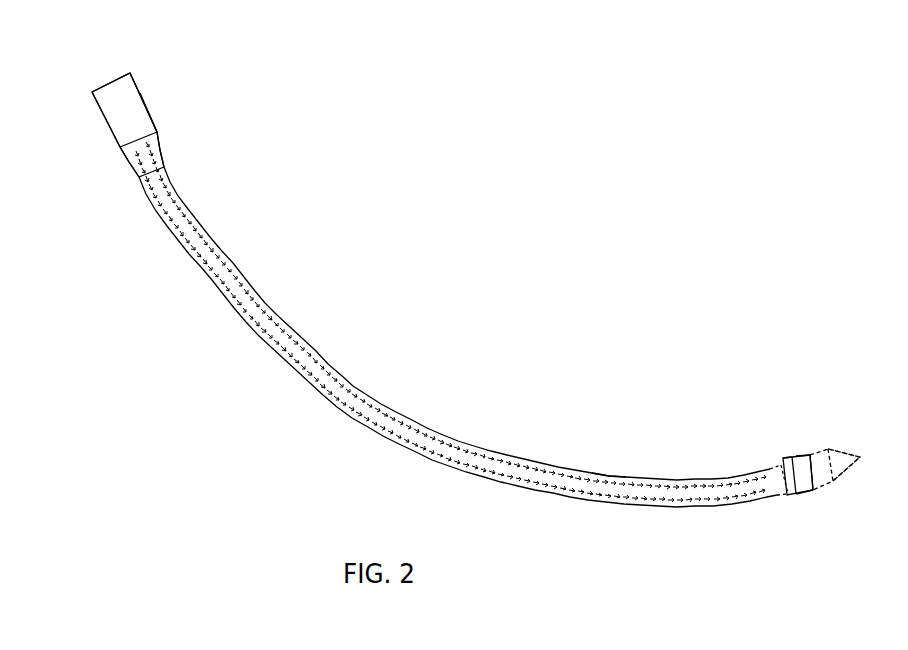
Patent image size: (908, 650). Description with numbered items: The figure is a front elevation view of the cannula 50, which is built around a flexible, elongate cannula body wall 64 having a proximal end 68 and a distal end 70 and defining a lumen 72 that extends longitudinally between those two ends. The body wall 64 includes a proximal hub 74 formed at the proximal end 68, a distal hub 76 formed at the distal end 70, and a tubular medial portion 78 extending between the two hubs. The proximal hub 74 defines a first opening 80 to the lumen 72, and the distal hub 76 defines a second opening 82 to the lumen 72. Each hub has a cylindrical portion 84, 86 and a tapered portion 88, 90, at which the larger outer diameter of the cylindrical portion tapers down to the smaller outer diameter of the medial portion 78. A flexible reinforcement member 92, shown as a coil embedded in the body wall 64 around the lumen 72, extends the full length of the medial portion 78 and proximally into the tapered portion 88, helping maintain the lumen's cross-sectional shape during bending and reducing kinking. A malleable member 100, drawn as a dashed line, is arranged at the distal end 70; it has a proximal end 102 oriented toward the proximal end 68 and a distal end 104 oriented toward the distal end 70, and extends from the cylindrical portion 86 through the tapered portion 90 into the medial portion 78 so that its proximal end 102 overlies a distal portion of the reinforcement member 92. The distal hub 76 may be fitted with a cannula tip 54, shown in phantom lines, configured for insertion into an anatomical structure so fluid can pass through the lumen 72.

The cannula 50 is at (454, 187).
The cannula tip 54 is at (831, 450).
The cannula body wall 64 is at (283, 326).
The proximal end 68 is at (95, 93).
The distal end 70 is at (815, 490).
The lumen 72 is at (115, 83).
The proximal hub 74 is at (139, 89).
The distal hub 76 is at (804, 493).
The tubular medial portion 78 is at (420, 421).
The first opening 80 is at (101, 88).
The second opening 82 is at (814, 472).
The cylindrical portion 84 is at (153, 118).
The cylindrical portion 86 is at (795, 496).
The tapered portion 88 is at (163, 153).
The tapered portion 90 is at (787, 496).
The flexible reinforcement member 92 is at (608, 463).
The malleable member 100 is at (783, 461).
The proximal end 102 is at (760, 468).
The distal end 104 is at (800, 456).